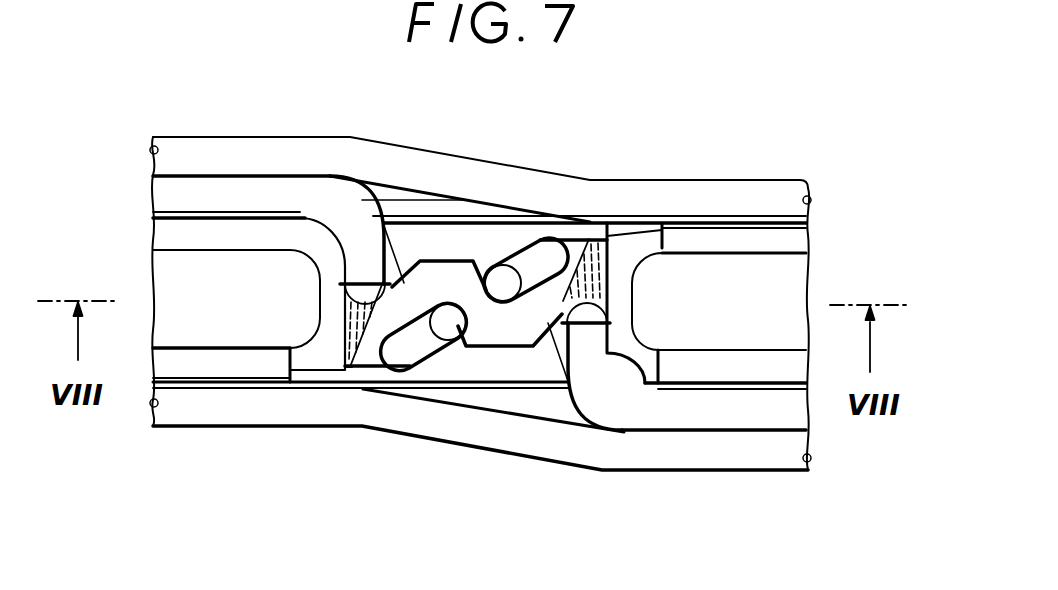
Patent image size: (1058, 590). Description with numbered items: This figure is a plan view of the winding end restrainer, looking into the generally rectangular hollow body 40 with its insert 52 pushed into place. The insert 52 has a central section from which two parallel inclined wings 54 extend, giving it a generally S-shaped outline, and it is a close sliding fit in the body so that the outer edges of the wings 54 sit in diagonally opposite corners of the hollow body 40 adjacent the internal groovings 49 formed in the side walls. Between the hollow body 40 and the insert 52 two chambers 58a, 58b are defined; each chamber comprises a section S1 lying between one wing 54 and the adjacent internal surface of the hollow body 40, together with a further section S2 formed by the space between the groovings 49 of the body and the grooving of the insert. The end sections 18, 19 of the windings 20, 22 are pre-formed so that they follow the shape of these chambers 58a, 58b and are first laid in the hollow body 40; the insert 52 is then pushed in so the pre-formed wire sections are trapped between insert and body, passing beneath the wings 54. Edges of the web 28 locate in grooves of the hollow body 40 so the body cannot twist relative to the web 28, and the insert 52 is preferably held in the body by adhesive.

The end section 18 is at (524, 210).
The end section 19 is at (453, 333).
The winding 20 is at (798, 408).
The winding 22 is at (156, 191).
The web 28 is at (813, 252).
The hollow body 40 is at (503, 278).
The internal grooving 49 is at (588, 243).
The insert 52 is at (512, 365).
The wing 54 is at (606, 262).
The chamber 58a is at (548, 375).
The chamber 58b is at (417, 242).
The section S1 is at (398, 280).
The section S2 is at (584, 238).